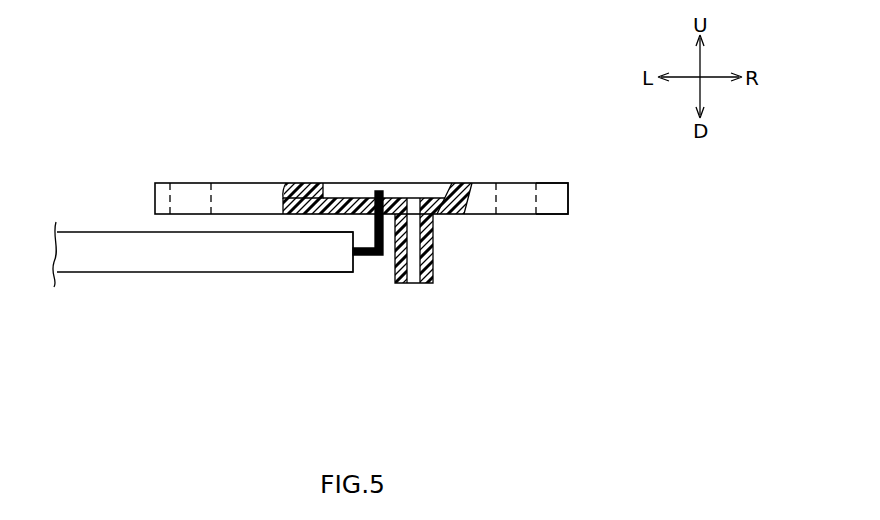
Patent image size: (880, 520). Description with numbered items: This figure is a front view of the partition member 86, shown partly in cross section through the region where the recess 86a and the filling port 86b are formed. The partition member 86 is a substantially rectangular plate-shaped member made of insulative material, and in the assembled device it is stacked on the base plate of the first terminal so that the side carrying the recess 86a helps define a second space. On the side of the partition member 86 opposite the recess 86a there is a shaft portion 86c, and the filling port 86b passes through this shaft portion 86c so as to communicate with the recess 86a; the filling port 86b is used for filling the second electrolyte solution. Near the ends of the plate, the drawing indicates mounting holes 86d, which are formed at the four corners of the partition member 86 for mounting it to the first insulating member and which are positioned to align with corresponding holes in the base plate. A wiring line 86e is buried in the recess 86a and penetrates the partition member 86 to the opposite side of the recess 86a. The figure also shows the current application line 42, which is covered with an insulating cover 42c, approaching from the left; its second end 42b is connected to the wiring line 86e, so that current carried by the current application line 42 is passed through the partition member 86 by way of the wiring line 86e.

The current application line 42 is at (135, 272).
The second end of the current application line 42b is at (370, 256).
The insulating cover 42c is at (252, 273).
The partition member 86 is at (464, 173).
The recess 86a is at (338, 183).
The filling port 86b is at (412, 283).
The shaft portion 86c is at (433, 258).
The mounting holes 86d is at (527, 182).
The wiring line 86e is at (395, 183).